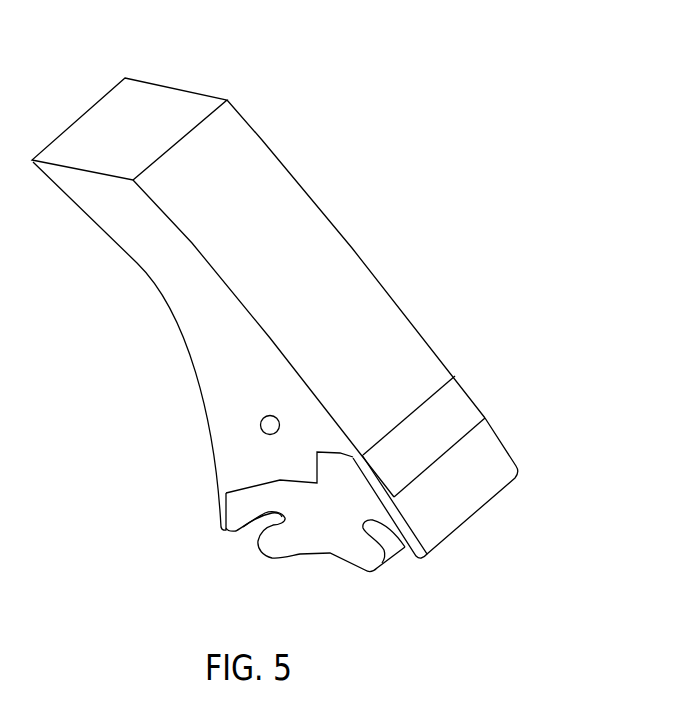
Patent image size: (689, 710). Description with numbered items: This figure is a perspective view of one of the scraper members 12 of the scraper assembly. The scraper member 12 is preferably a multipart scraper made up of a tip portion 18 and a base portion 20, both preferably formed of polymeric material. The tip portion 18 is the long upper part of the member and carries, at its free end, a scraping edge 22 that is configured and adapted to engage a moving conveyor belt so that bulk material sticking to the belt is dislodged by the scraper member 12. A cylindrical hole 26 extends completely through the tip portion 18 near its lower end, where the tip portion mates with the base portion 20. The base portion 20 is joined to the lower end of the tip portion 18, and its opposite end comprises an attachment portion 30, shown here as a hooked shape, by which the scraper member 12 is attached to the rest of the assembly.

The scraper member 12 is at (440, 55).
The tip portion 18 is at (153, 252).
The base portion 20 is at (340, 495).
The scraping edge 22 is at (78, 118).
The cylindrical hole 26 is at (271, 424).
The attachment portion 30 is at (300, 537).